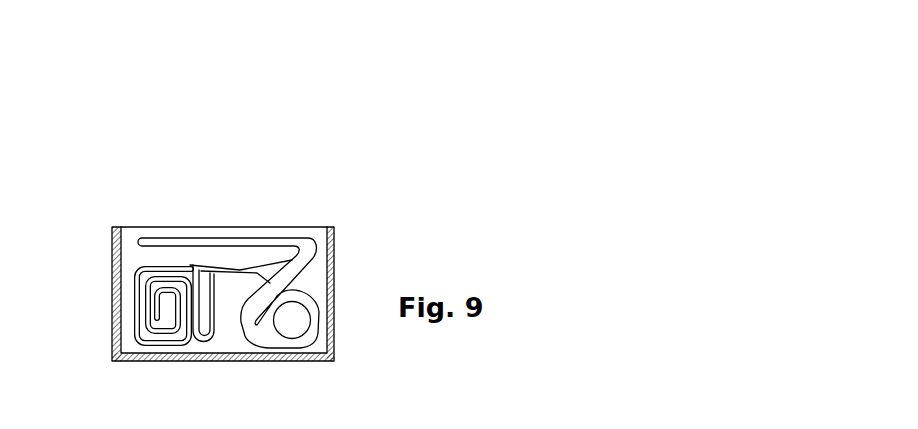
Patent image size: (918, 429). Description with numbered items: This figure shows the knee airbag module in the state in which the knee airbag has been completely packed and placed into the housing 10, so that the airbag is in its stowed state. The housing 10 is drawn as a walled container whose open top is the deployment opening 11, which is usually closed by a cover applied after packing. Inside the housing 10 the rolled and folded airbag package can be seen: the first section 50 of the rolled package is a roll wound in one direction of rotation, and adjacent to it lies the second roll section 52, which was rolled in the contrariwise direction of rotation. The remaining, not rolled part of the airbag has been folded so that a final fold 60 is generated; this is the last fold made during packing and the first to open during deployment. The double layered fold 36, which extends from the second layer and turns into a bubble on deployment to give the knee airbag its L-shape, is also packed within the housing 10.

The housing 10 is at (336, 276).
The deployment opening 11 is at (284, 226).
The double layered fold 36 is at (176, 238).
The first section of the rolled package 50 is at (147, 298).
The second roll section 52 is at (206, 338).
The final fold 60 is at (230, 266).